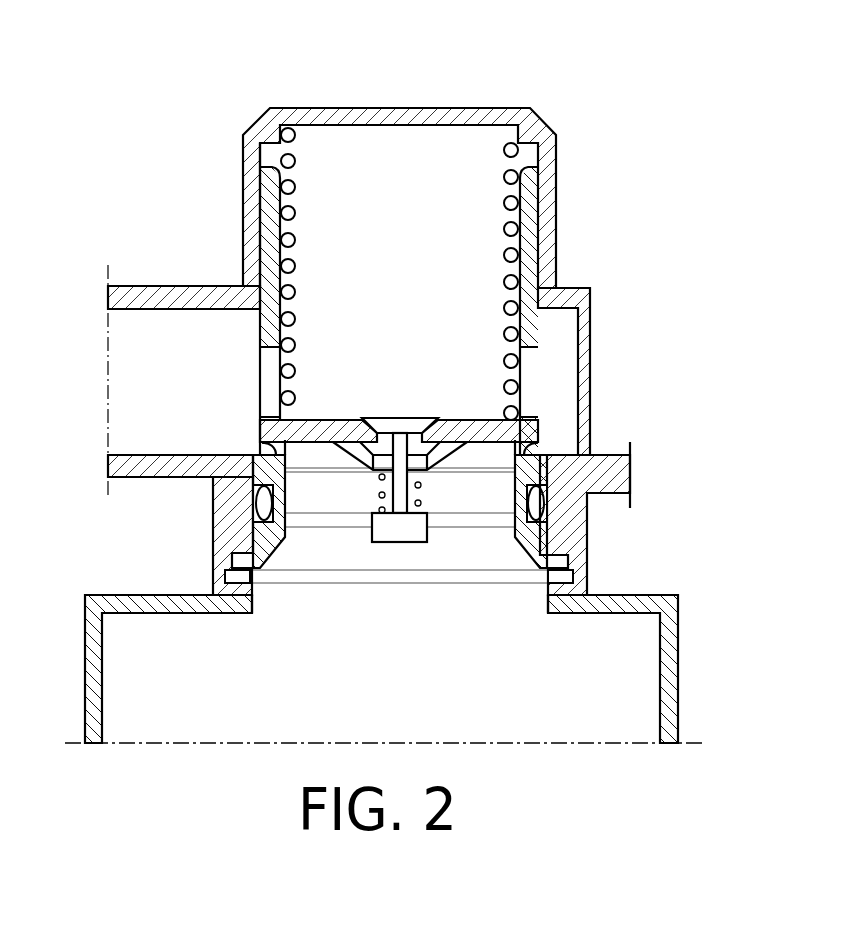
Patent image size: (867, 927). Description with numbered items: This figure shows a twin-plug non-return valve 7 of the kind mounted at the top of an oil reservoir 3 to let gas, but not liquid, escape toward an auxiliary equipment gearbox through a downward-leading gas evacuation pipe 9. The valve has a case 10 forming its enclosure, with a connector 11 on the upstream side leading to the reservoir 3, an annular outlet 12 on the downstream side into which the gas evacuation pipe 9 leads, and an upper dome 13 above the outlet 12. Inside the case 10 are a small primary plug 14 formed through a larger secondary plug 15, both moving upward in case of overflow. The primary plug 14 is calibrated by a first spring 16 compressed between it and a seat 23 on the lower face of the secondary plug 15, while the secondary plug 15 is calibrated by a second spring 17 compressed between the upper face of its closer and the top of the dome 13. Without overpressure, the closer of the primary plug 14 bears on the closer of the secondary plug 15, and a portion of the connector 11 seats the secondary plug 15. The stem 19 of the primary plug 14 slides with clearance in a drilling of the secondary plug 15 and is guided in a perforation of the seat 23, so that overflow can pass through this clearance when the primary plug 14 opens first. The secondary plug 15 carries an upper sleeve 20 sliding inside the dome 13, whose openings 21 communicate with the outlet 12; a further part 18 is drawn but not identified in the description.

The reservoir 3 is at (160, 595).
The non-return valve 7 is at (473, 82).
The gas evacuation pipe 9 is at (184, 380).
The case 10 is at (587, 279).
The connector 11 is at (589, 527).
The outlet 12 is at (594, 434).
The upper dome 13 is at (550, 220).
The primary plug 14 is at (404, 418).
The secondary plug 15 is at (473, 419).
The first spring 16 is at (421, 489).
The second spring 17 is at (293, 213).
The seal 18 is at (262, 441).
The stem 19 is at (407, 447).
The upper sleeve 20 is at (531, 190).
The openings 21 is at (272, 404).
The seat 23 is at (369, 485).